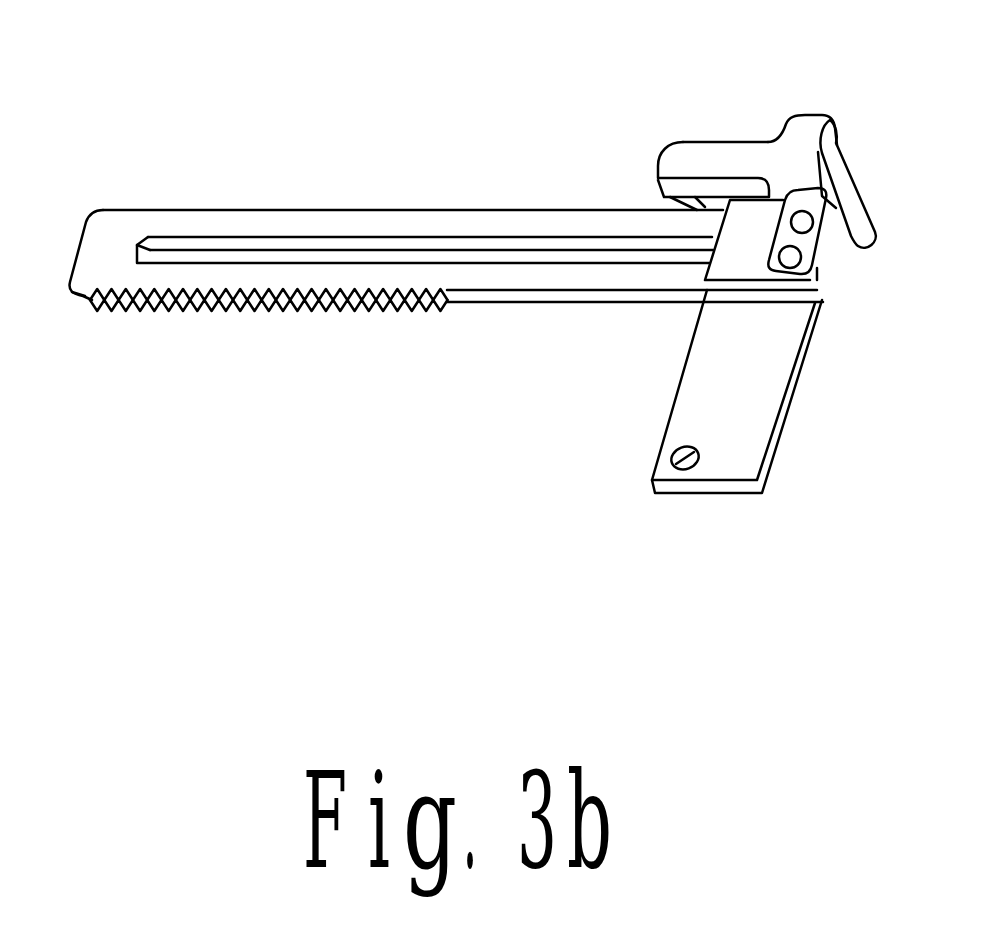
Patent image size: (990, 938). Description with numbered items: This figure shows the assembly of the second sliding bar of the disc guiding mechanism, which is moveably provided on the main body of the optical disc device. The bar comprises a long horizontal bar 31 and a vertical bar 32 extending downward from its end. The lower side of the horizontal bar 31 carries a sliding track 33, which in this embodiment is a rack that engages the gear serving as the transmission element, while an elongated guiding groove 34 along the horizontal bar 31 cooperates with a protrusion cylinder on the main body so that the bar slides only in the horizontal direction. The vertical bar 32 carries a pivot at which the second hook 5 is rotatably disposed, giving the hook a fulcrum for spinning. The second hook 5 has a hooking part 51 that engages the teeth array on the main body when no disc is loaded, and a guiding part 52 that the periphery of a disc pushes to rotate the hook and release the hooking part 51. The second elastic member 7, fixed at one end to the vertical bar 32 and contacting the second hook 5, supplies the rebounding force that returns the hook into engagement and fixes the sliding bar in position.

The horizontal bar 31 is at (108, 245).
The vertical bar 32 is at (753, 390).
The sliding track 33 is at (312, 307).
The guiding groove 34 is at (318, 252).
The second hook 5 is at (794, 139).
The hooking part 51 is at (664, 198).
The guiding part 52 is at (845, 212).
The second elastic member 7 is at (866, 245).